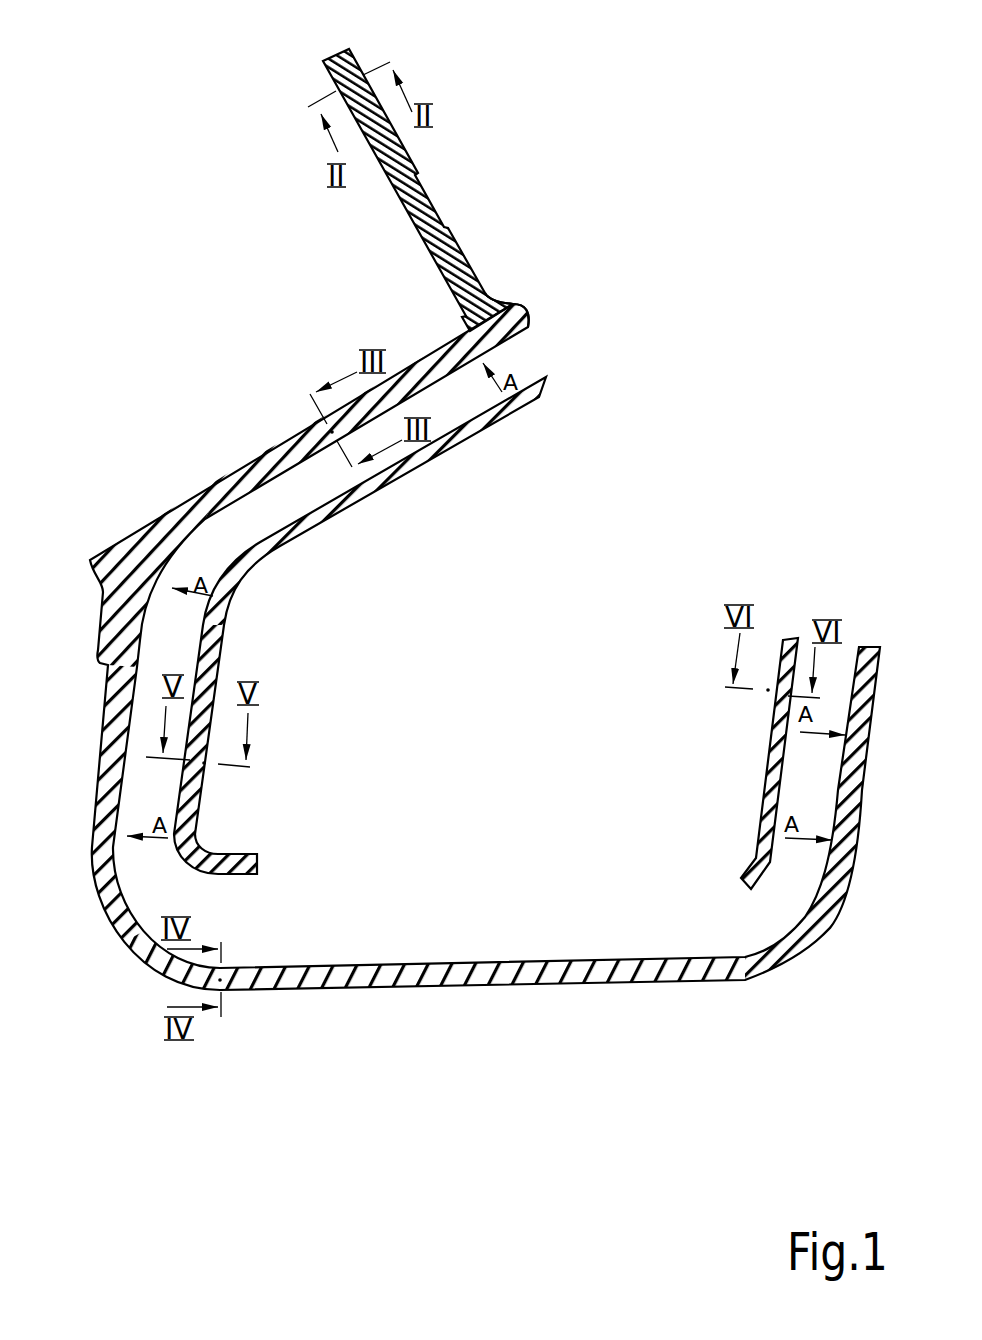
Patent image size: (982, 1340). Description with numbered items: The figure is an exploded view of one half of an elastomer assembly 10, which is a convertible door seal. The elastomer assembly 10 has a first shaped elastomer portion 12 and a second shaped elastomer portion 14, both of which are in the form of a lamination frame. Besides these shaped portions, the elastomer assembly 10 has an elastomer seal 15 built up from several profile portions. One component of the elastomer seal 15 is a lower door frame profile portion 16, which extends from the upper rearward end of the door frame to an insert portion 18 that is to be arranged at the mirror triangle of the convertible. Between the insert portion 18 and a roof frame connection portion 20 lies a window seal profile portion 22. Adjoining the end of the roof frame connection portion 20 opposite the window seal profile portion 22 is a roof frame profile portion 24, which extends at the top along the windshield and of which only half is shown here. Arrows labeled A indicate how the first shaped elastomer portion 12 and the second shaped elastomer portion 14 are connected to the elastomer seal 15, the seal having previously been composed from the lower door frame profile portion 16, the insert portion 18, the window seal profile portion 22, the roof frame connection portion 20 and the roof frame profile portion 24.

The elastomer assembly 10 is at (451, 527).
The first shaped elastomer portion 12 is at (548, 383).
The second shaped elastomer portion 14 is at (789, 638).
The elastomer seal 15 is at (123, 968).
The lower door frame profile portion 16 is at (473, 967).
The insert portion 18 is at (95, 658).
The roof frame connection portion 20 is at (482, 326).
The window seal profile portion 22 is at (300, 435).
The roof frame profile portion 24 is at (334, 52).